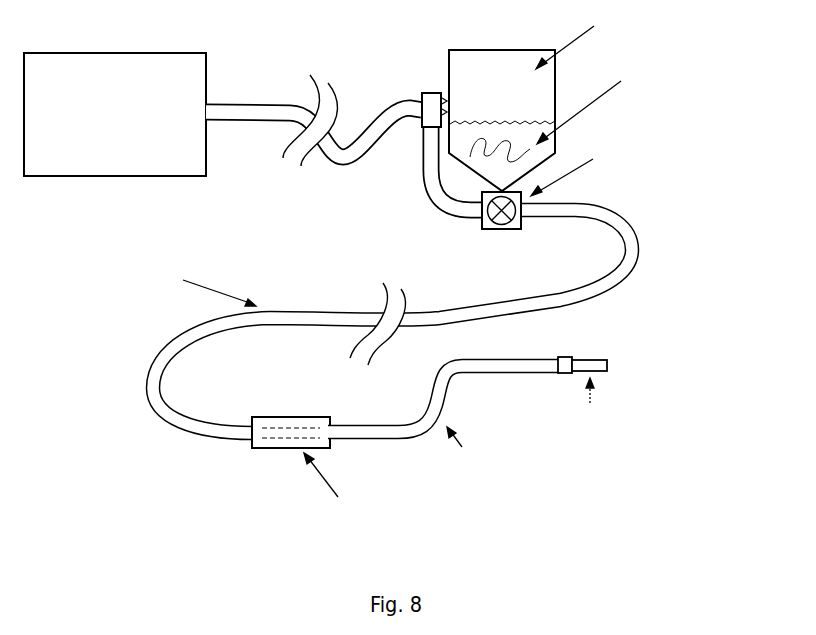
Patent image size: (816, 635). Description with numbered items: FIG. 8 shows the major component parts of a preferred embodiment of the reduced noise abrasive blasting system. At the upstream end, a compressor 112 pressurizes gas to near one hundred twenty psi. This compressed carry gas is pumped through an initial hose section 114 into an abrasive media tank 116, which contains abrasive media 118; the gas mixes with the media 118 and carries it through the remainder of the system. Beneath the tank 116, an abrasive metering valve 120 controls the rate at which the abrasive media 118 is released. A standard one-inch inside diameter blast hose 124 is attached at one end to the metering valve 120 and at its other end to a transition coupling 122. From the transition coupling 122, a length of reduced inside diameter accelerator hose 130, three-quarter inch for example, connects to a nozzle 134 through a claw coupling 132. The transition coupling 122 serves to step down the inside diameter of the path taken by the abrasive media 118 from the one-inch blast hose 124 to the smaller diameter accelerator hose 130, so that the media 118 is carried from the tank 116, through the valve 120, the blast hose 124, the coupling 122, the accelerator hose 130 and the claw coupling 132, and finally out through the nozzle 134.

The compressor 112 is at (115, 127).
The initial hose section 114 is at (314, 133).
The abrasive media tank 116 is at (611, 103).
The abrasive media 118 is at (585, 117).
The abrasive metering valve 120 is at (601, 190).
The transition coupling 122 is at (324, 470).
The blast hose 124 is at (368, 321).
The accelerator hose 130 is at (444, 427).
The claw coupling 132 is at (564, 353).
The nozzle 134 is at (594, 357).